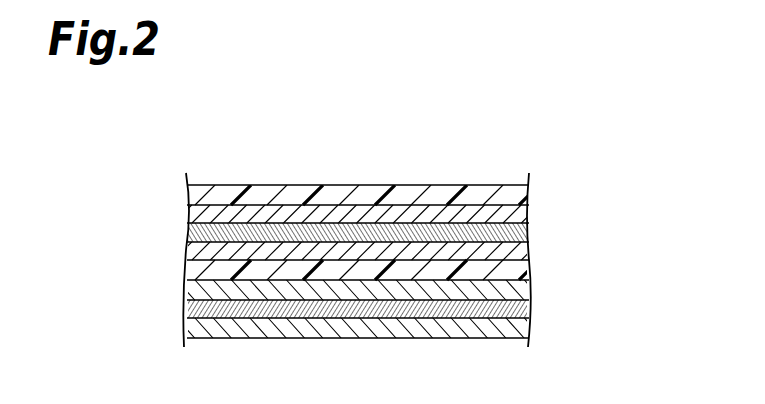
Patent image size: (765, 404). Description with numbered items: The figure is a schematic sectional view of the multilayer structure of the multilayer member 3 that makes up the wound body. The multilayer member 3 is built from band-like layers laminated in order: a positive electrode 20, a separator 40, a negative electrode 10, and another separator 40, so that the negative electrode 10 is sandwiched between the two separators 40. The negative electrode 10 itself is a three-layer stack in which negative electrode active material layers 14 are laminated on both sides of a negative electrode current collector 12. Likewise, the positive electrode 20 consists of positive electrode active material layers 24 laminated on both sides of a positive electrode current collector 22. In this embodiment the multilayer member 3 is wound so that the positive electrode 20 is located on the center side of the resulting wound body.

The multilayer member 3 is at (419, 268).
The negative electrode 10 is at (399, 234).
The negative electrode current collector 12 is at (528, 232).
The negative electrode active material layer 14 is at (528, 210).
The positive electrode 20 is at (401, 323).
The positive electrode current collector 22 is at (528, 312).
The positive electrode active material layer 24 is at (528, 292).
The separator 40 is at (528, 193).